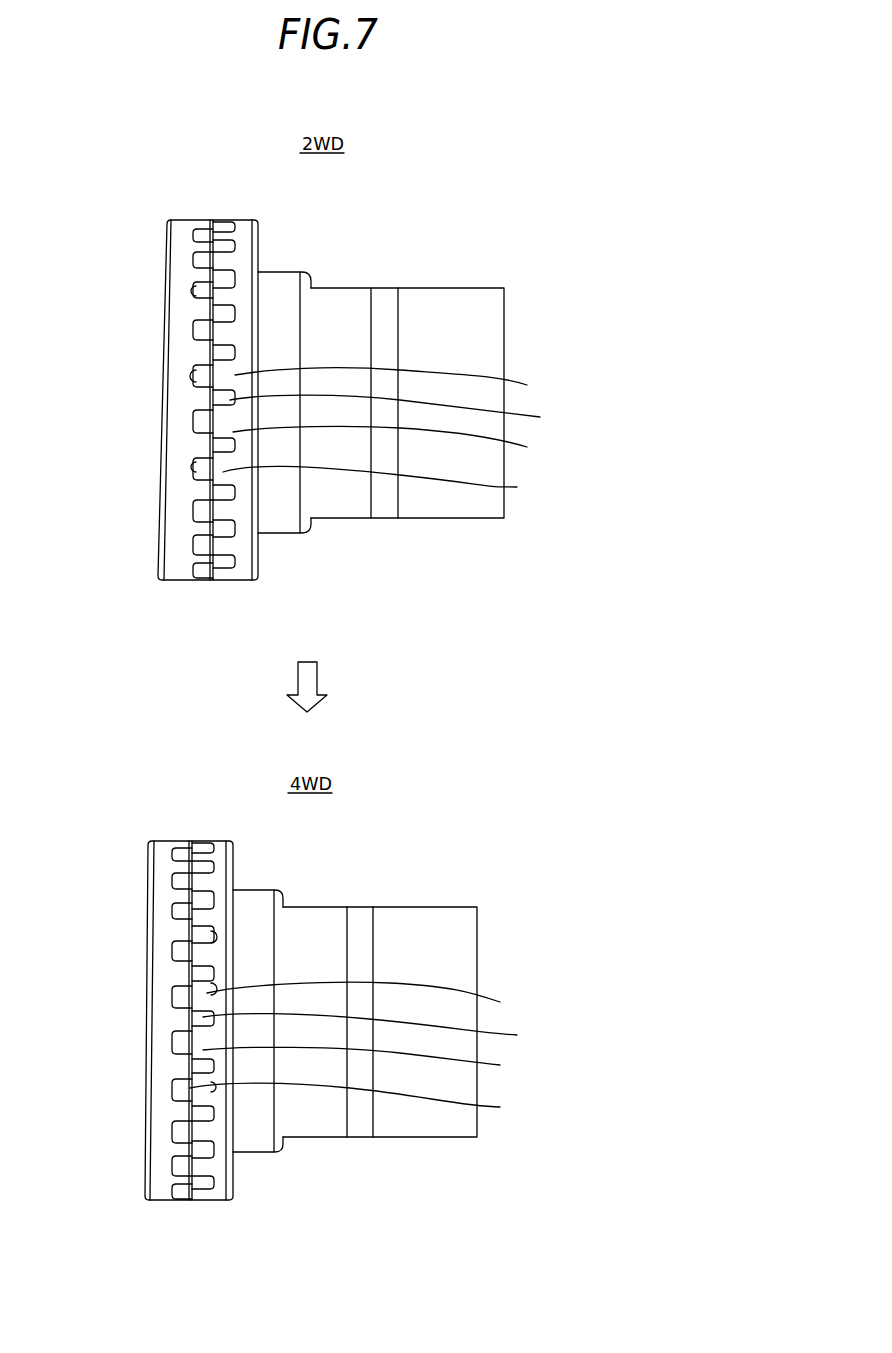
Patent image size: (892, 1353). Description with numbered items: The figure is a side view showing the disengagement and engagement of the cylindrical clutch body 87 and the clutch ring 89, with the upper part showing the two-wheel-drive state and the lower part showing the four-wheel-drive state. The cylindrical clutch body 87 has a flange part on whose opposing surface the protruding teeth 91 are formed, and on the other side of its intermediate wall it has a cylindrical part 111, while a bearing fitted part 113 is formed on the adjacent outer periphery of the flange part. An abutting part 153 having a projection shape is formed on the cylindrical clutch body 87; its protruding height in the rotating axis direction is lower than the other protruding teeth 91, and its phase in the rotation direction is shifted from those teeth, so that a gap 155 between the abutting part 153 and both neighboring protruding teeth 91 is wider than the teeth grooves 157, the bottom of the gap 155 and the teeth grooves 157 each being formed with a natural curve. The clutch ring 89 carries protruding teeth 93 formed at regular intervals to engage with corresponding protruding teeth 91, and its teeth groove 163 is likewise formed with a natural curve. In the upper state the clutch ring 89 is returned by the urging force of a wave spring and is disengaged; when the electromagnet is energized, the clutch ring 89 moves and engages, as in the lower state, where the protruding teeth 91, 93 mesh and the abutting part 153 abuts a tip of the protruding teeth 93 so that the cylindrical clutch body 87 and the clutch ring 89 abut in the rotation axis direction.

The cylindrical clutch body 87 is at (428, 288).
The clutch ring 89 is at (167, 220).
The protruding teeth 91 is at (223, 220).
The protruding teeth 93 is at (200, 220).
The cylindrical part 111 is at (467, 315).
The bearing fitted part 113 is at (292, 272).
The abutting part 153 is at (394, 720).
The gap 155 is at (386, 723).
The teeth grooves 157 is at (237, 253).
The teeth groove 163 is at (207, 298).